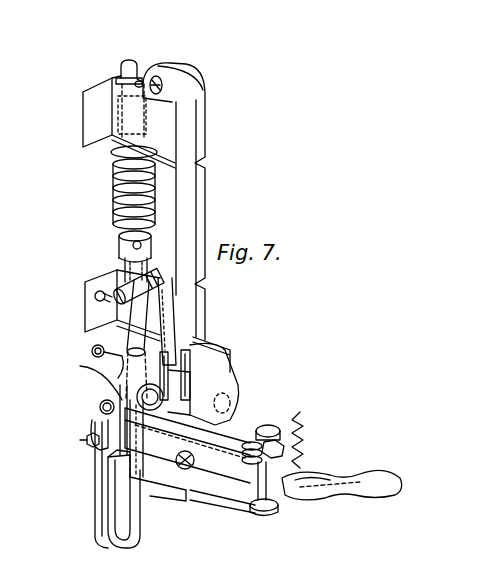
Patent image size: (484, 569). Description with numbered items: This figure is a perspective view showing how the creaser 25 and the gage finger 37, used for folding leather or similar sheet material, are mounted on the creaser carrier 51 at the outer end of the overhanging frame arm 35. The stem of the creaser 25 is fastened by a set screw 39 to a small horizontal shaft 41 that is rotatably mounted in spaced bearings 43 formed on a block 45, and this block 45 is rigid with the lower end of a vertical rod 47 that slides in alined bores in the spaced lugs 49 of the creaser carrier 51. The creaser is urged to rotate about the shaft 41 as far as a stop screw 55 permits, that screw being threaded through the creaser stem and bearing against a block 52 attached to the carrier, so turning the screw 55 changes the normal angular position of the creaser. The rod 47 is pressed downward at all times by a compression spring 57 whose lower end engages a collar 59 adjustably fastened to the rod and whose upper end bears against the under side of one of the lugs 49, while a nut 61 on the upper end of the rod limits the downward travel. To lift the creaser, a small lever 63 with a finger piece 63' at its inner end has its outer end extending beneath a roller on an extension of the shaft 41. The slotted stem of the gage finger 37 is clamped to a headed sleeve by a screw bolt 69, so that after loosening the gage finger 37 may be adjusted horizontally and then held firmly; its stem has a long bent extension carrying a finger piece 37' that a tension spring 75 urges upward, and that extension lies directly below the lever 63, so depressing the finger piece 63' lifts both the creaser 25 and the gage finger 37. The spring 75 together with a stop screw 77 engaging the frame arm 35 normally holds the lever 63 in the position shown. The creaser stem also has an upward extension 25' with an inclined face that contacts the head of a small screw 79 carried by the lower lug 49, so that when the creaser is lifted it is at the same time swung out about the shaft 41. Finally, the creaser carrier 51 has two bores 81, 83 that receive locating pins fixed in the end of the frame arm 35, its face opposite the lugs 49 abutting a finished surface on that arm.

The creaser 25 is at (77, 485).
The upward extension 25' is at (184, 366).
The frame arm 35 is at (267, 430).
The gage finger 37 is at (144, 509).
The finger piece 37' is at (267, 513).
The set screw 39 is at (99, 407).
The horizontal shaft 41 is at (165, 353).
The bearings 43 is at (108, 372).
The block 45 is at (197, 355).
The vertical rod 47 is at (127, 63).
The lugs 49 is at (93, 95).
The creaser carrier 51 is at (198, 213).
The block 52 is at (140, 482).
The stop screw 55 is at (92, 438).
The compression spring 57 is at (112, 195).
The collar 59 is at (116, 248).
The nut 61 is at (139, 82).
The small lever 63 is at (197, 438).
The finger piece 63' is at (351, 469).
The screw bolt 69 is at (283, 448).
The tension spring 75 is at (297, 420).
The stop screw 77 is at (262, 514).
The small screw 79 is at (145, 277).
The bore 81 is at (158, 85).
The bore 83 is at (237, 390).